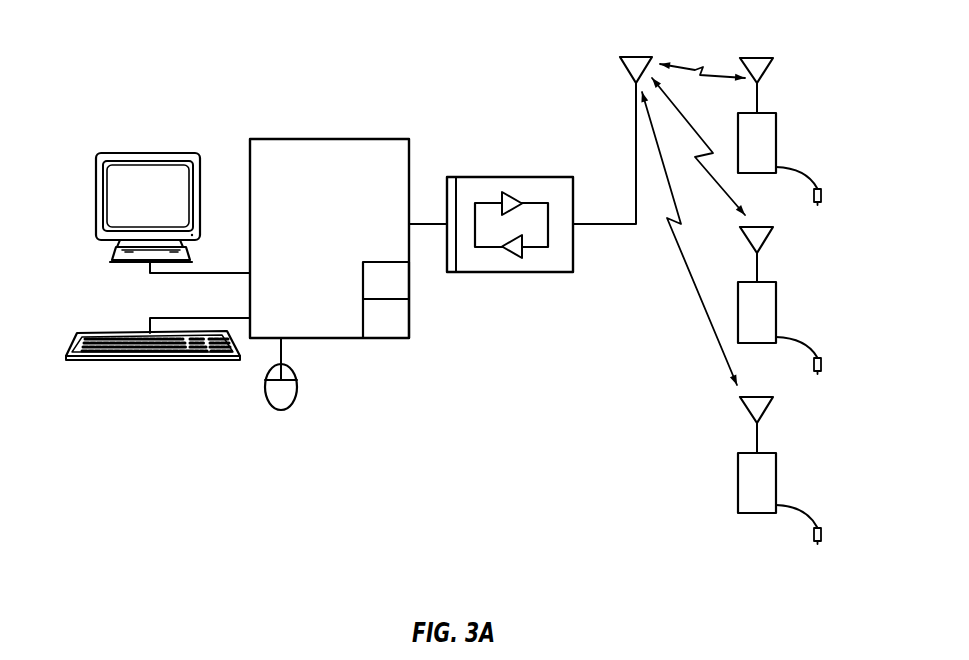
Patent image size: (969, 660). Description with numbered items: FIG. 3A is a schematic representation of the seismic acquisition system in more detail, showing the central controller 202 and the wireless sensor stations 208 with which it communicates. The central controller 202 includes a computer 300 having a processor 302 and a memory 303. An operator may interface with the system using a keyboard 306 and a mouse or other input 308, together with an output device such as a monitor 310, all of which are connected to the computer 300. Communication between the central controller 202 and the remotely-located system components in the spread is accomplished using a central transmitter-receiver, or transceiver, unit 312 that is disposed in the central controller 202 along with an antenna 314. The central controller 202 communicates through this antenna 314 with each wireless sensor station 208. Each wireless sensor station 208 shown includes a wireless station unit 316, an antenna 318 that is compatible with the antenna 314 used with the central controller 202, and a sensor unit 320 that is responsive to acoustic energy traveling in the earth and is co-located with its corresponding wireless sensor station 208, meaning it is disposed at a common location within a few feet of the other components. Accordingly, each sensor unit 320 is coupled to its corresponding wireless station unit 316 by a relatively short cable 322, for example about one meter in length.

The central controller 202 is at (145, 423).
The wireless sensor station 208 is at (765, 113).
The computer 300 is at (257, 127).
The processor 302 is at (363, 313).
The memory 303 is at (380, 262).
The keyboard 306 is at (78, 331).
The mouse or other input 308 is at (297, 390).
The monitor 310 is at (112, 153).
The central transmitter-receiver (transceiver) unit 312 is at (427, 105).
The antenna 314 is at (638, 57).
The wireless station unit 316 is at (777, 480).
The antenna 318 is at (767, 413).
The sensor unit 320 is at (825, 531).
The cable 322 is at (805, 168).